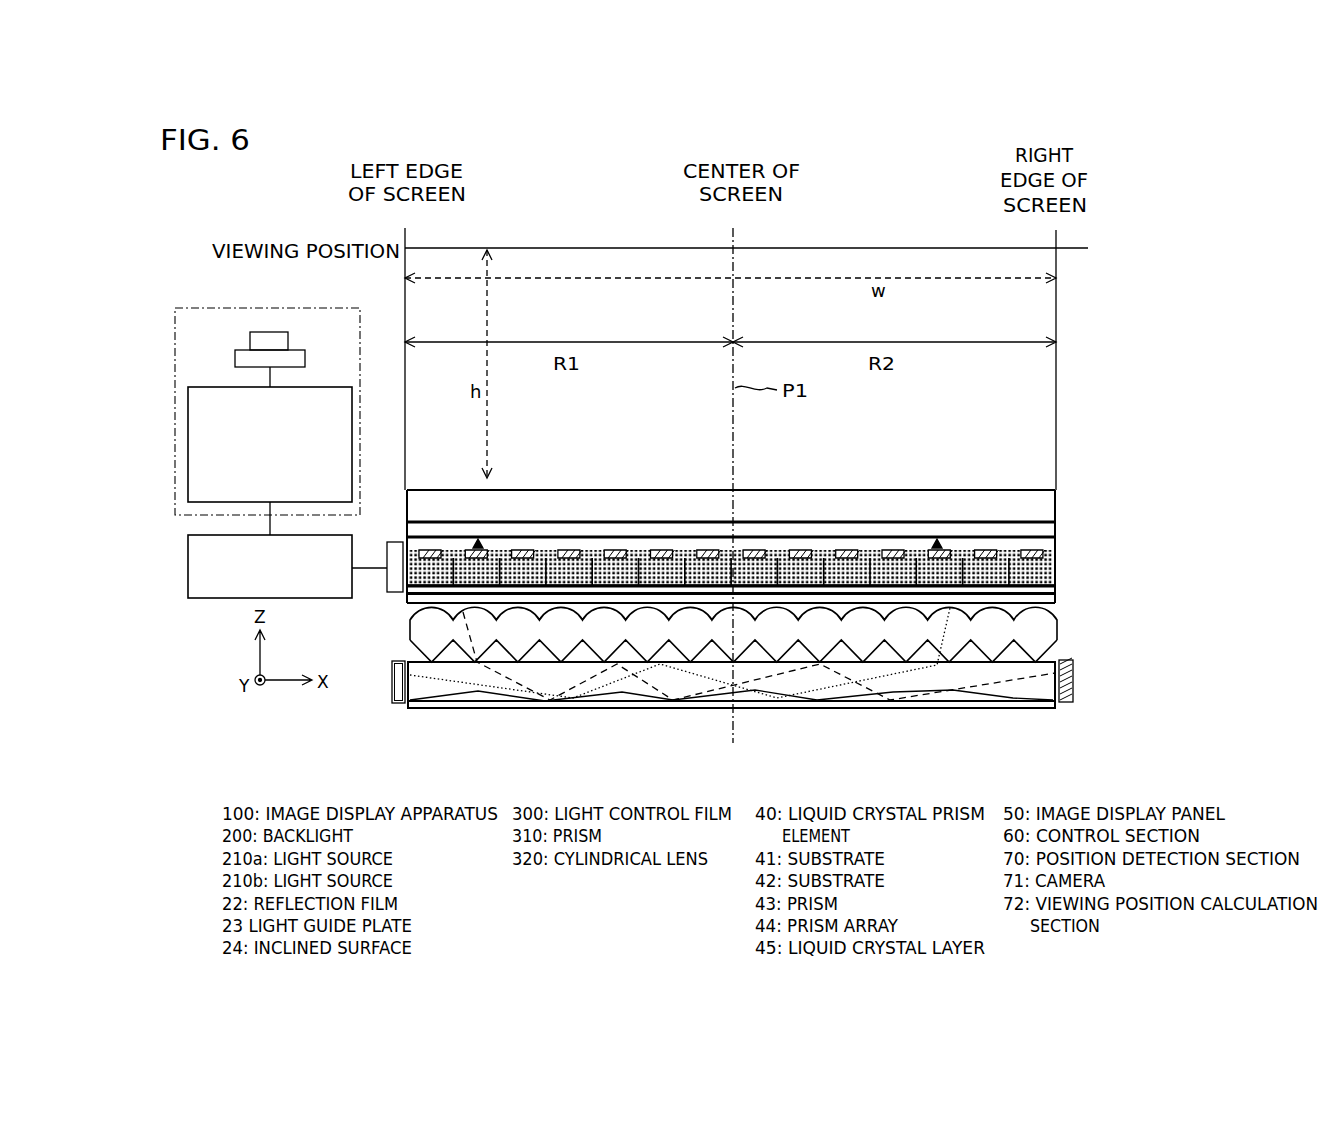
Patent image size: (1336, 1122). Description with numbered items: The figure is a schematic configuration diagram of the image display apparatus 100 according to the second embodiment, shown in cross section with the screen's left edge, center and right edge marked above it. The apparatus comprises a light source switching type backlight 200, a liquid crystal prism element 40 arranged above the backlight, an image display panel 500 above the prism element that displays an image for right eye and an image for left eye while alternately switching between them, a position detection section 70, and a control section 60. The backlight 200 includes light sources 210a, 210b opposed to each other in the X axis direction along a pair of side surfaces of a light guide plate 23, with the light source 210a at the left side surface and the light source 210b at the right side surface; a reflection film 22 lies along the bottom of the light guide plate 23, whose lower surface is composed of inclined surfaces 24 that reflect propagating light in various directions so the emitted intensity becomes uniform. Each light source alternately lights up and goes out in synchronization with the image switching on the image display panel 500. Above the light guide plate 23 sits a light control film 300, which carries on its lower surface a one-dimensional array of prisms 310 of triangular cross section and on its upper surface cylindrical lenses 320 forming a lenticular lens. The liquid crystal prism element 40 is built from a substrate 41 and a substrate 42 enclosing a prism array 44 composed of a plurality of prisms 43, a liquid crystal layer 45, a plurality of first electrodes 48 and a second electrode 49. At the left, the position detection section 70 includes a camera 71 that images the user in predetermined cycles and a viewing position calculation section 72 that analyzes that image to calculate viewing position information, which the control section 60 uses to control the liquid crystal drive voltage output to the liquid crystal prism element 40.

The image display apparatus 100 is at (1163, 226).
The light source switching type backlight 200 is at (1185, 627).
The light source 210a is at (398, 704).
The light source 210b is at (1065, 704).
The reflection film 22 is at (893, 710).
The light guide plate 23 is at (1030, 692).
The inclined surface 24 is at (478, 712).
The light control film 300 is at (1140, 618).
The prism 310 is at (1035, 645).
The cylindrical lens 320 is at (1042, 612).
The liquid crystal prism element 40 is at (1165, 475).
The substrate 41 is at (1058, 508).
The substrate 42 is at (1057, 598).
The prism 43 is at (1058, 555).
The prism array 44 is at (731, 571).
The liquid crystal layer 45 is at (1058, 540).
The first electrode 48 is at (910, 550).
The second electrode 49 is at (1057, 587).
The image display panel 500 is at (1057, 502).
The control section 60 is at (295, 566).
The position detection section 70 is at (202, 308).
The camera 71 is at (290, 347).
The viewing position calculation section 72 is at (270, 444).